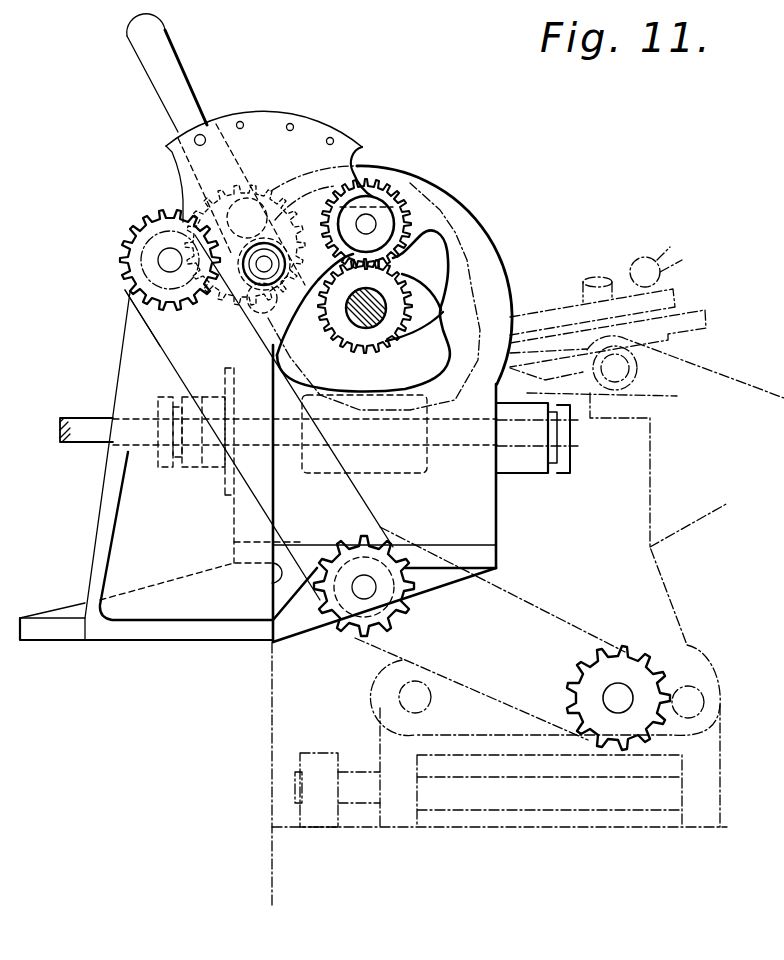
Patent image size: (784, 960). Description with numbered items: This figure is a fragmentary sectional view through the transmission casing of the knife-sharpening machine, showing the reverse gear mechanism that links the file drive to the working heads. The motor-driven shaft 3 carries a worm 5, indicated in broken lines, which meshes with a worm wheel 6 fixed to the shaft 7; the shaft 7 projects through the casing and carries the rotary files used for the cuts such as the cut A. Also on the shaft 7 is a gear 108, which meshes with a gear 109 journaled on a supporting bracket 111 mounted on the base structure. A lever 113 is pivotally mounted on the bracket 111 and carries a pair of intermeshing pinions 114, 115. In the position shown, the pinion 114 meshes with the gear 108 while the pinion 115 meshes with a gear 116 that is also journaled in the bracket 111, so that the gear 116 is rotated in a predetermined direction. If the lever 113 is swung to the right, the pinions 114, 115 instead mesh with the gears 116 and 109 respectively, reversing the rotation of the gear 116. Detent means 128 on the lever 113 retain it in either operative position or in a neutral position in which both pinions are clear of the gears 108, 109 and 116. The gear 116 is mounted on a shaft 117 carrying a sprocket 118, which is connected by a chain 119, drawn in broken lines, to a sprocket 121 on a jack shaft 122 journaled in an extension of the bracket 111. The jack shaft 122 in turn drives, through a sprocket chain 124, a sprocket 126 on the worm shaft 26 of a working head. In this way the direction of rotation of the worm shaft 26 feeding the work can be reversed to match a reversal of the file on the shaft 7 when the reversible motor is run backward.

The lever 113 is at (193, 105).
The detent means 128 is at (206, 141).
The pinion 115 is at (258, 204).
The pinion 114 is at (283, 258).
The gear 109 is at (404, 200).
The cut A is at (481, 219).
The worm wheel 6 is at (462, 262).
The gear 108 is at (388, 284).
The shaft 7 is at (378, 328).
The gear 116 is at (162, 264).
The shaft 117 is at (118, 279).
The sprocket 118 is at (128, 293).
The chain 119 is at (250, 492).
The shaft 3 is at (80, 420).
The supporting bracket 111 is at (103, 500).
The worm 5 is at (413, 474).
The jack shaft 122 is at (372, 590).
The sprocket 121 is at (398, 628).
The sprocket chain 124 is at (550, 617).
The sprocket 126 is at (583, 673).
The worm shaft 26 is at (630, 697).